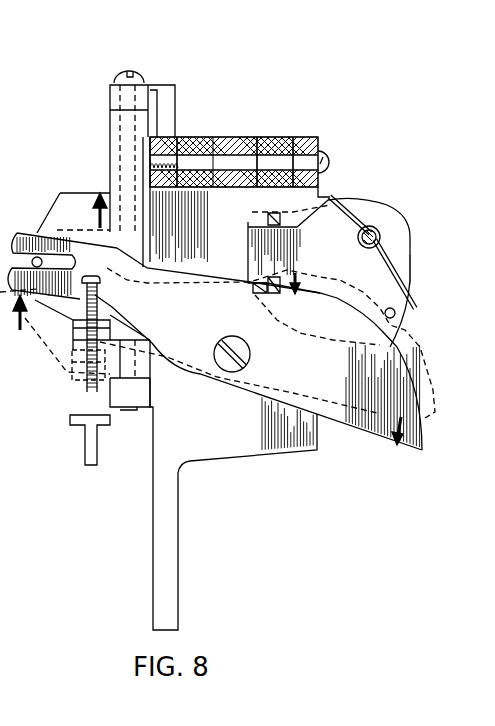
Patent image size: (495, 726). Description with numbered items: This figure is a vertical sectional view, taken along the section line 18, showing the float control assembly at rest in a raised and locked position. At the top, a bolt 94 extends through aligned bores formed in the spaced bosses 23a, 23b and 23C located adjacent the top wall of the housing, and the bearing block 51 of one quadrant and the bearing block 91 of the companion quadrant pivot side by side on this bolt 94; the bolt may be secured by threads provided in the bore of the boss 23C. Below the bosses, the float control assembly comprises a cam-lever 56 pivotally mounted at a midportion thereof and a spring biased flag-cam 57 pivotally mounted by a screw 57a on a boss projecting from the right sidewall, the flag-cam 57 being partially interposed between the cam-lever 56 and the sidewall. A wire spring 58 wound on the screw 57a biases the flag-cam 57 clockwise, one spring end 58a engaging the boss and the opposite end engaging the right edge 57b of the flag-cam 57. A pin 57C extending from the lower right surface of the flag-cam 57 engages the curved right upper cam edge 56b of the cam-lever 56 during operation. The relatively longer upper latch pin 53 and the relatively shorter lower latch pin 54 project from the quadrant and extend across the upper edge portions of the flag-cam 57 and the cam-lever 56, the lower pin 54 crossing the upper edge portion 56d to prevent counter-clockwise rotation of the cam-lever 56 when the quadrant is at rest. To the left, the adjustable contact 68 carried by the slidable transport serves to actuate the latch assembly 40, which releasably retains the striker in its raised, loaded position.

The section line 18— 18 is at (213, 245).
The boss 23C is at (175, 137).
The bearing block 91 is at (201, 136).
The boss 23b is at (231, 136).
The bolt 94 is at (247, 163).
The bearing block 51 is at (277, 136).
The boss 23a is at (303, 136).
The spring end 58a is at (343, 207).
The screw 57a is at (371, 226).
The wire spring 58 is at (379, 231).
The right edge 57b is at (410, 271).
The pin 57C is at (389, 308).
The curved right upper cam edge 56b is at (382, 334).
The upper latch pin 53 is at (267, 218).
The flag-cam 57 is at (283, 261).
The lower latch pin 54 is at (266, 289).
The cam-lever 56 is at (177, 297).
The upper edge portion 56d is at (260, 294).
The adjustable contact 68 is at (87, 385).
The latch assembly 40 is at (75, 443).